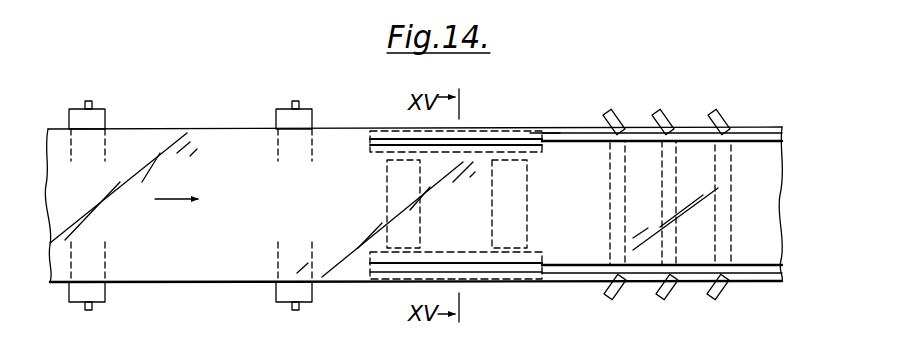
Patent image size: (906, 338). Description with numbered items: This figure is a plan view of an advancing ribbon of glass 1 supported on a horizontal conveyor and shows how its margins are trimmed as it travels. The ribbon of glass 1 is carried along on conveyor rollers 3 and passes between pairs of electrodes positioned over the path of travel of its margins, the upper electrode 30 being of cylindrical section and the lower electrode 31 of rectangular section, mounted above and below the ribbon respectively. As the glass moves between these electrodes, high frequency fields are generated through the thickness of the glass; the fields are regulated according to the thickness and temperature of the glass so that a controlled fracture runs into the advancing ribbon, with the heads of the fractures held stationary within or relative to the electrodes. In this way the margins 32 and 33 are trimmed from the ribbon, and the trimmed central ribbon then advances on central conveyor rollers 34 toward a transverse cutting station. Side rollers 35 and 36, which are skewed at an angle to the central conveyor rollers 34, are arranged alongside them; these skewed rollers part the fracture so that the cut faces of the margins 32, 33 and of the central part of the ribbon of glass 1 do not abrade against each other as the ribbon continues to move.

The ribbon of glass 1 is at (207, 274).
The conveyor rollers 3 is at (103, 116).
The upper electrode 30 is at (500, 141).
The lower electrode 31 is at (543, 133).
The margin 32 is at (750, 129).
The margin 33 is at (705, 274).
The central conveyor rollers 34 is at (612, 199).
The side roller 35 is at (712, 113).
The side roller 36 is at (663, 293).